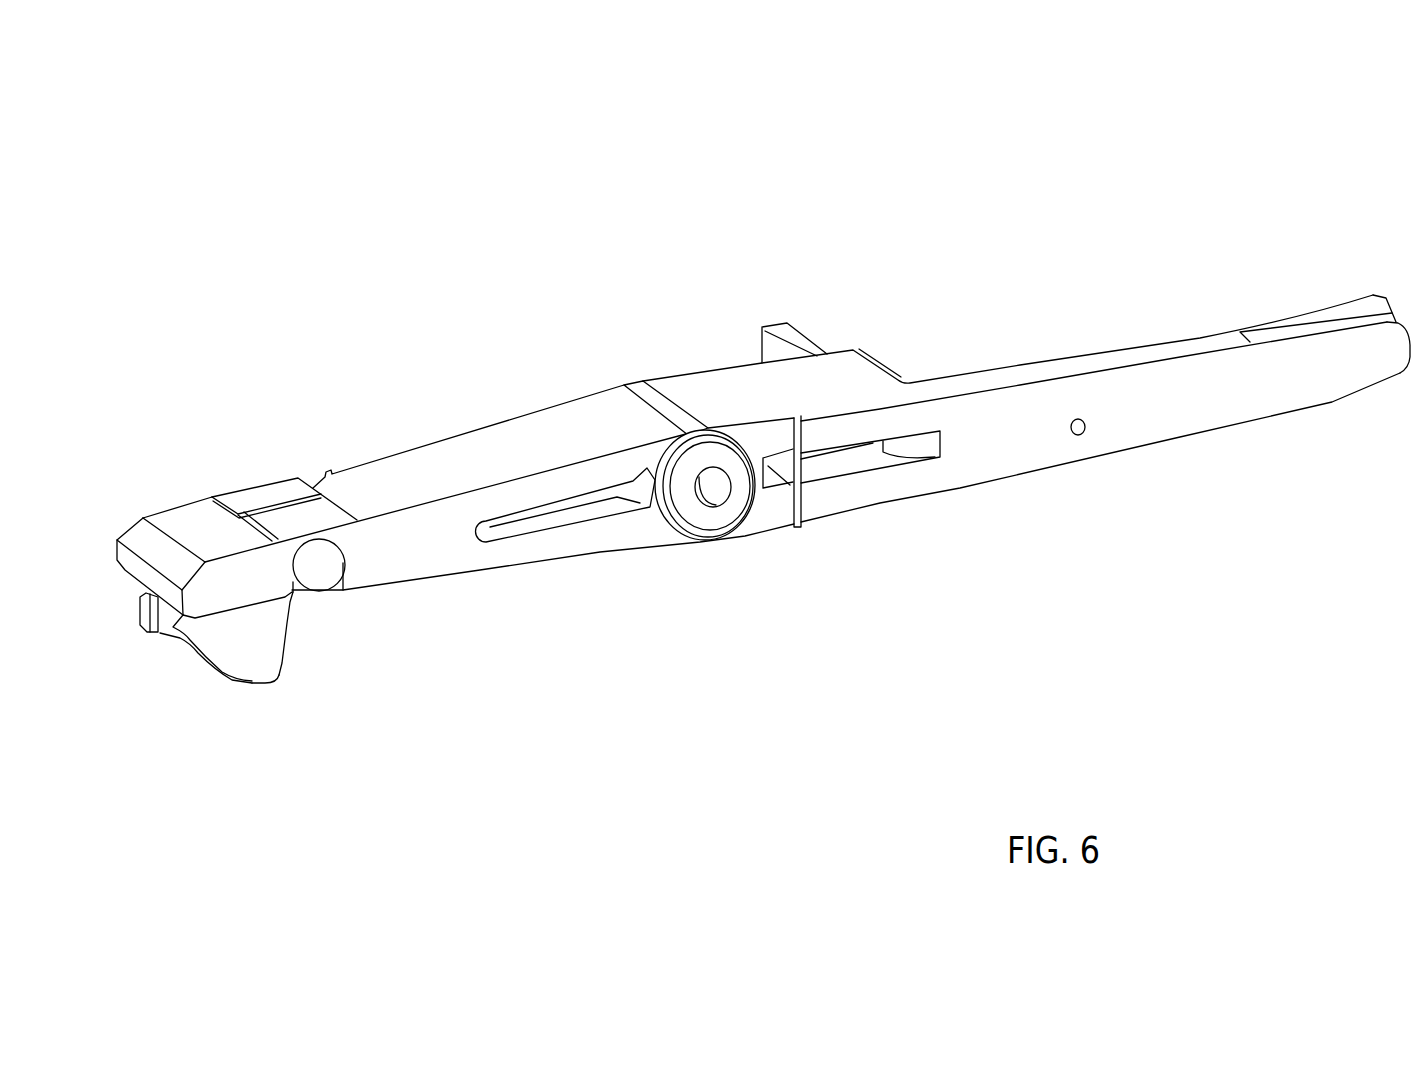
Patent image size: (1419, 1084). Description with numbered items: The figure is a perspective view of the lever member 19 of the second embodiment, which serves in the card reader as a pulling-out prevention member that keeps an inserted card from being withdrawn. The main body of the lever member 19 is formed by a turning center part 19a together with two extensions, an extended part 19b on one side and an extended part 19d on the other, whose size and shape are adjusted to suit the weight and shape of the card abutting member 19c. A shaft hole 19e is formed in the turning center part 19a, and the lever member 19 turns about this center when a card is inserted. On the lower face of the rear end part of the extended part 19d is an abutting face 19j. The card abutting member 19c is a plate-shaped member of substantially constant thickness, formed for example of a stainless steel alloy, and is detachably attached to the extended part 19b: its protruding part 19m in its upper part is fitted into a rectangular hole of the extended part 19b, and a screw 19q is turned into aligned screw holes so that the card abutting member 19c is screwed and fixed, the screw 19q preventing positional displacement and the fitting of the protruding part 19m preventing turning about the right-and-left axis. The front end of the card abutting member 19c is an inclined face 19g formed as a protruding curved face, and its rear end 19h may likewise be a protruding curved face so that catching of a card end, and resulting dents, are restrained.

The lever member 19 is at (1206, 192).
The turning center part 19a is at (627, 384).
The extended part 19b is at (387, 452).
The card abutting member 19c is at (268, 686).
The extended part 19d is at (1092, 353).
The shaft hole 19e is at (716, 503).
The inclined face 19g is at (190, 654).
The rear end 19h is at (292, 640).
The abutting face 19j is at (1366, 390).
The protruding part 19m is at (273, 506).
The screw 19q is at (330, 570).